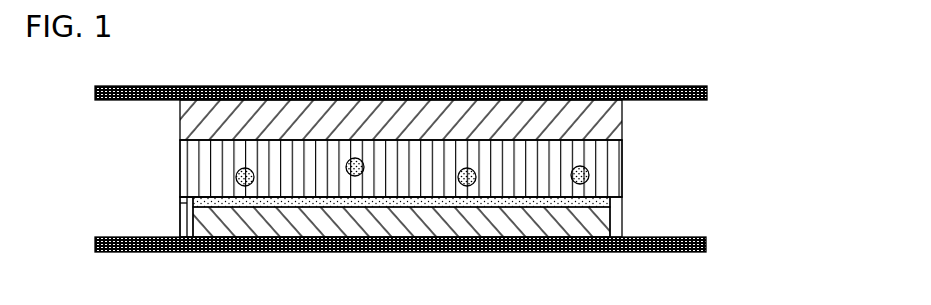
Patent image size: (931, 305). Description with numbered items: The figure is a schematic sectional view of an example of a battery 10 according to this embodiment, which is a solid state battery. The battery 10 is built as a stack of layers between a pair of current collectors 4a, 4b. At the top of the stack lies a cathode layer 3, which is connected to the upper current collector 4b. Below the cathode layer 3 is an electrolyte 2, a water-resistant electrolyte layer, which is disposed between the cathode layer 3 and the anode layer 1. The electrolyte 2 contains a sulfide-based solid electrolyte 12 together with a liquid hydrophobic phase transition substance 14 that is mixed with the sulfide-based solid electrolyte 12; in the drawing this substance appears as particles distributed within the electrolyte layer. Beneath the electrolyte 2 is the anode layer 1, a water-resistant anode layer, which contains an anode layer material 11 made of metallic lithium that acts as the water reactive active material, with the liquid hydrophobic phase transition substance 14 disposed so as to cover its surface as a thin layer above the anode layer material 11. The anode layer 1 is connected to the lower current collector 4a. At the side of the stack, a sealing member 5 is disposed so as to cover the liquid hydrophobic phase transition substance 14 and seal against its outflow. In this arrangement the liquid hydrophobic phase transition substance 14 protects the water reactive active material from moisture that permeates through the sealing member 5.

The battery 10 is at (667, 59).
The current collector 4a is at (706, 253).
The current collector 4b is at (707, 89).
The cathode layer 3 is at (603, 107).
The electrolyte 2 is at (484, 167).
The sulfide-based solid electrolyte 12 is at (600, 150).
The liquid hydrophobic phase transition substance 14 is at (600, 172).
The anode layer 1 is at (484, 218).
The anode layer material 11 is at (592, 226).
The sealing member 5 is at (187, 215).